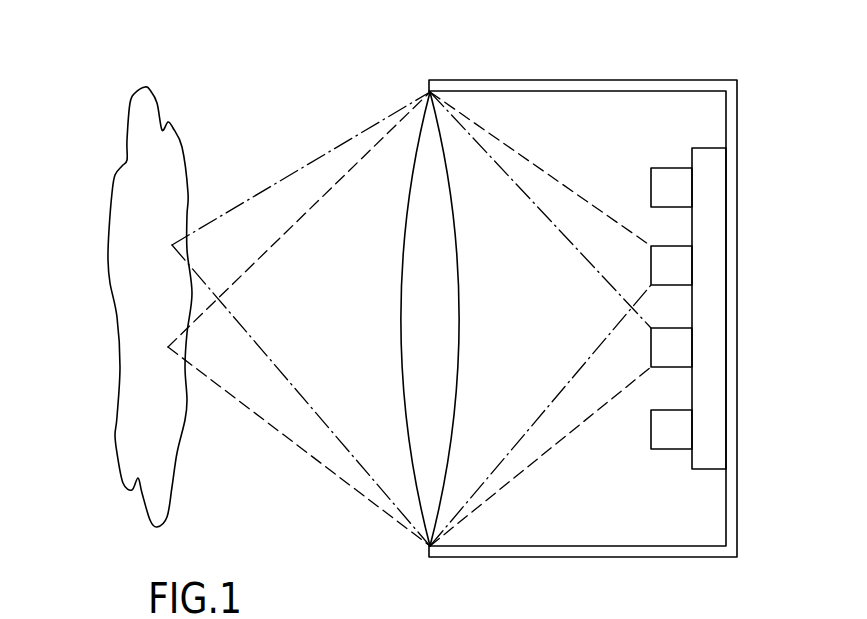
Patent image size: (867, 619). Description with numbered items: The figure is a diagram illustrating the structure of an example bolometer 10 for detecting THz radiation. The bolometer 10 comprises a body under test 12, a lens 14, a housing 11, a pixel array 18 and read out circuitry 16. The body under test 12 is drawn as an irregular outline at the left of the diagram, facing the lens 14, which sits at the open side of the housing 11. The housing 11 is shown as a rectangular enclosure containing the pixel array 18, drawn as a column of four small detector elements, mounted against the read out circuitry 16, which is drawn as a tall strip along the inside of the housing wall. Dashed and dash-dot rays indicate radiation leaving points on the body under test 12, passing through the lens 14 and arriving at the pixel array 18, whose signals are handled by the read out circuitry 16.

The bolometer 10 is at (75, 473).
The housing 11 is at (593, 72).
The body under test 12 is at (135, 150).
The lens 14 is at (420, 172).
The read out circuitry 16 is at (713, 215).
The pixel array 18 is at (648, 187).